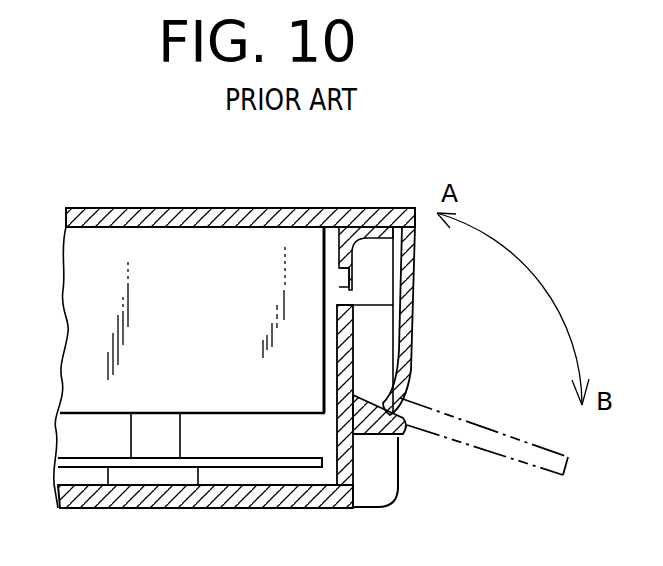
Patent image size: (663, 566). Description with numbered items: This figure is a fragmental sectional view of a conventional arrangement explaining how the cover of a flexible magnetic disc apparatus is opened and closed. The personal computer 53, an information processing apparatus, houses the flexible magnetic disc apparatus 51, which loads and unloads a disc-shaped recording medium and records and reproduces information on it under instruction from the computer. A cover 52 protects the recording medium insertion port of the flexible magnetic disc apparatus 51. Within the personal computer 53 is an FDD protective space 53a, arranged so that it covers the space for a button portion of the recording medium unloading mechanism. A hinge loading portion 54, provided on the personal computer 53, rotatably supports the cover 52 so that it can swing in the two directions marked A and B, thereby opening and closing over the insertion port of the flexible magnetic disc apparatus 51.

The personal computer 53 is at (158, 208).
The flexible magnetic disc apparatus 51 is at (257, 265).
The FDD protective space 53a is at (370, 273).
The cover 52 is at (415, 273).
The hinge loading portion 54 is at (408, 437).